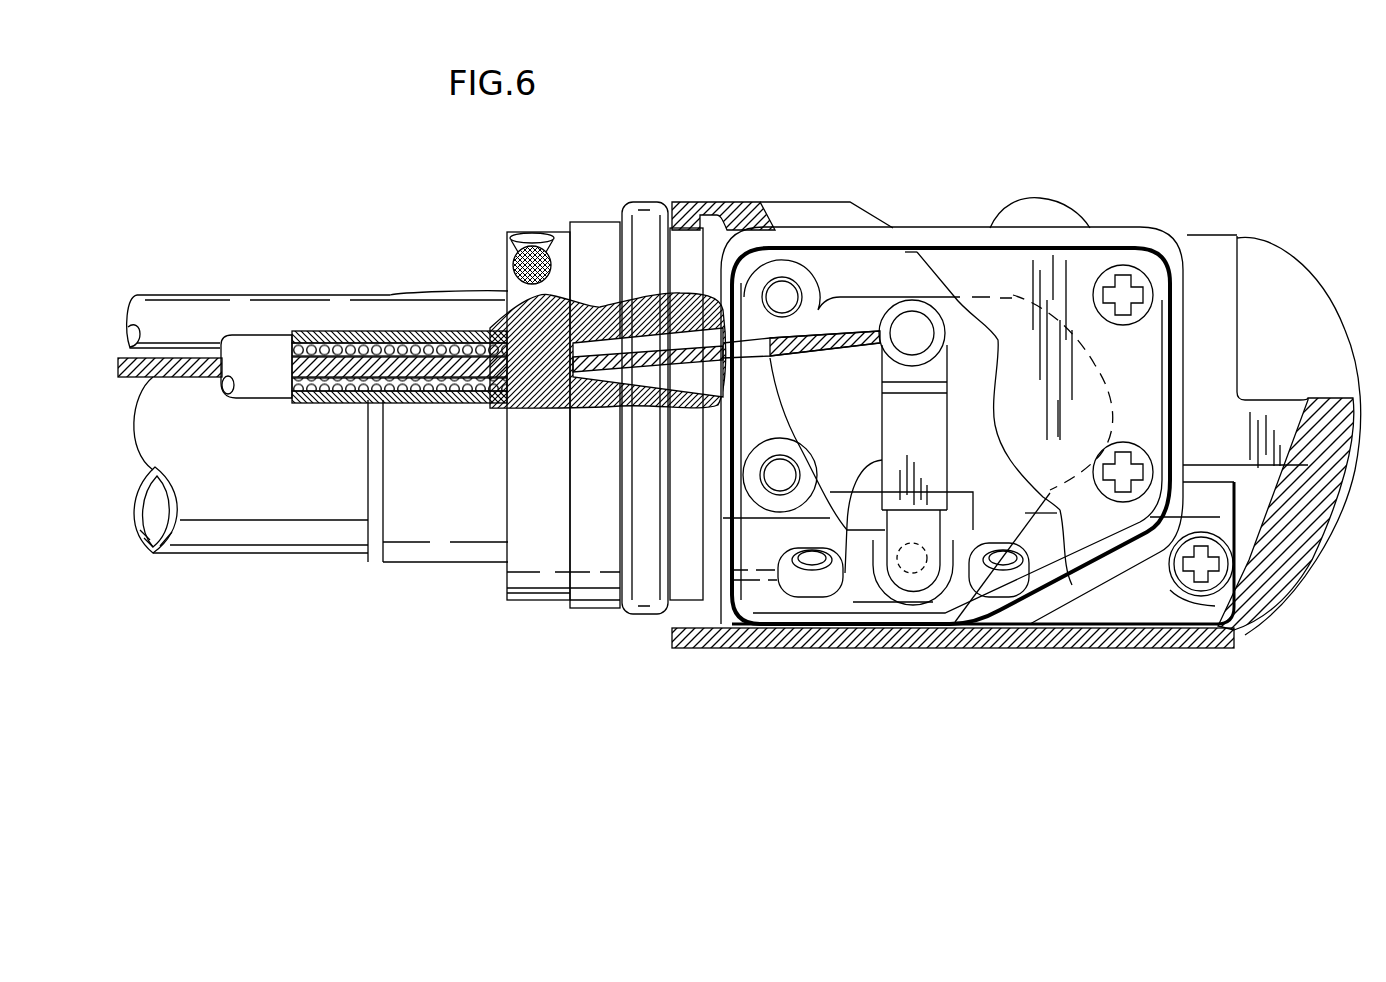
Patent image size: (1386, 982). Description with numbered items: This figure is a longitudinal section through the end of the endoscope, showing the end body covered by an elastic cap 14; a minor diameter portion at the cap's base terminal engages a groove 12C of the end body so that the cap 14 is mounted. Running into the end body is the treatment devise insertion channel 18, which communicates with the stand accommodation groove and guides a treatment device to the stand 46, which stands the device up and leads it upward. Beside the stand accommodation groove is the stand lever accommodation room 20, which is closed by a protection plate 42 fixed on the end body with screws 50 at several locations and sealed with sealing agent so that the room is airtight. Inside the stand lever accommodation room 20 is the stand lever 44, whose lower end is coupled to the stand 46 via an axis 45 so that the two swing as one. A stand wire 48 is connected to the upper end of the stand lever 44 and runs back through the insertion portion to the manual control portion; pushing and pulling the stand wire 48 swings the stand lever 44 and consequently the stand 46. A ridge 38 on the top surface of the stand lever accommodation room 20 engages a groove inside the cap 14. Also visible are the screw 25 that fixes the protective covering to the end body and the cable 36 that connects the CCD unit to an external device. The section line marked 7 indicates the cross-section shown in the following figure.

The groove 12C is at (687, 200).
The cap 14 is at (727, 200).
The section line 7- 7 is at (945, 120).
The stand lever accommodation room 20 is at (958, 342).
The stand 46 is at (1058, 215).
The ridge 38 is at (1160, 232).
The screws 50 is at (1148, 285).
The stand wire 48 is at (187, 368).
The cable 36 is at (315, 305).
The treatment devise insertion channel 18 is at (280, 540).
The stand lever 44 is at (845, 573).
The axis 45 is at (905, 600).
The protection plate 42 is at (1085, 545).
The screw 25 is at (1207, 597).